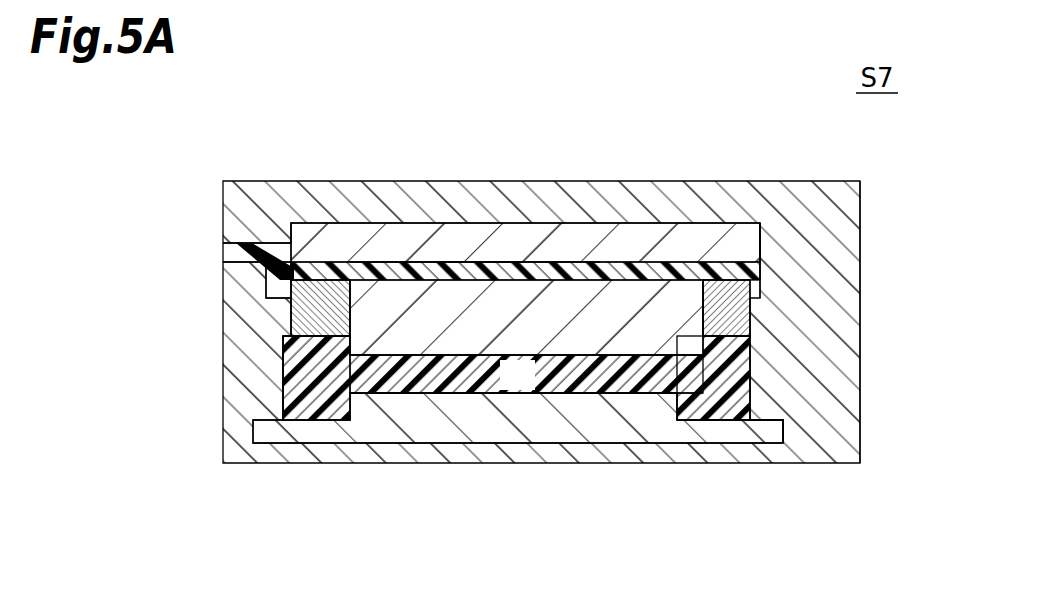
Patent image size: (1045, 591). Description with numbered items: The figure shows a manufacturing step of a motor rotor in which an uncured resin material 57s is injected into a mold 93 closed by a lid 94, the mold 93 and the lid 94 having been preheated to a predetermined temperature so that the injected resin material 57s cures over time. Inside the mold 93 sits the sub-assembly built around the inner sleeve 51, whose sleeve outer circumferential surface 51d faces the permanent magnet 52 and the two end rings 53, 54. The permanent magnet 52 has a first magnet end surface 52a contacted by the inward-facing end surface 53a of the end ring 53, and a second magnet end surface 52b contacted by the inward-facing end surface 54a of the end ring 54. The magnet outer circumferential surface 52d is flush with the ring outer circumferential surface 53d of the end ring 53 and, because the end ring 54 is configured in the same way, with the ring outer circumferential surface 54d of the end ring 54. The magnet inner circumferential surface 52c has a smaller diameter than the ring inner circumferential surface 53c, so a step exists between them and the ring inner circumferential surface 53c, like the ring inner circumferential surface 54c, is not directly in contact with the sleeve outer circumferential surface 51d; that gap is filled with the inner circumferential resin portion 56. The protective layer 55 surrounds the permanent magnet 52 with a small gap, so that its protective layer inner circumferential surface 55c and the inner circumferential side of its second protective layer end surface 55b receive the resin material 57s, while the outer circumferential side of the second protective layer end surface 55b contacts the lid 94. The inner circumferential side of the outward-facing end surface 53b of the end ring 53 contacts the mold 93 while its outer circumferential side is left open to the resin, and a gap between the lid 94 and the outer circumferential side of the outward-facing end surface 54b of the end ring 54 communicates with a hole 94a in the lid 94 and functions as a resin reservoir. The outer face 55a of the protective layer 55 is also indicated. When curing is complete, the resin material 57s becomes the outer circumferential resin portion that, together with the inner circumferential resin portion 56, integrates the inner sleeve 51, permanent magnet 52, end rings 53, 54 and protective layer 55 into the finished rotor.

The inner sleeve 51 is at (452, 398).
The sleeve outer circumferential surface 51d is at (690, 418).
The permanent magnet 52 is at (588, 264).
The first magnet end surface 52a is at (715, 372).
The second magnet end surface 52b is at (321, 370).
The magnet inner circumferential surface 52c is at (575, 366).
The magnet outer circumferential surface 52d is at (527, 261).
The end ring 53 is at (743, 262).
The inward-facing end surface 53a is at (700, 299).
The outward-facing end surface 53b is at (755, 303).
The ring inner circumferential surface 53c is at (762, 418).
The ring outer circumferential surface 53d is at (709, 261).
The end ring 54 is at (337, 272).
The inward-facing end surface 54a is at (283, 337).
The outward-facing end surface 54b is at (367, 264).
The ring inner circumferential surface 54c is at (282, 383).
The ring outer circumferential surface 54d is at (316, 261).
The protective layer 55 is at (487, 218).
The lid right end 55a is at (757, 258).
The second protective layer end surface 55b is at (288, 258).
The protective layer inner circumferential surface 55c is at (432, 261).
The inner circumferential resin portion 56 is at (466, 384).
The uncured resin material 57s is at (775, 266).
The mold 93 is at (862, 213).
The lid 94 is at (227, 182).
The hole 94a is at (240, 256).